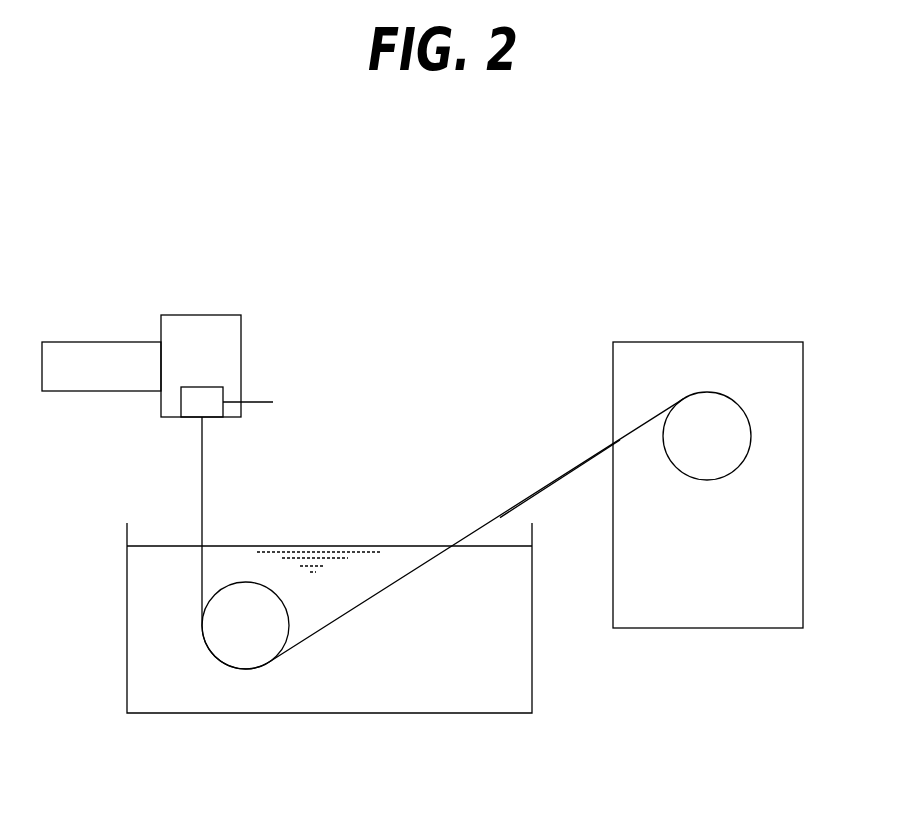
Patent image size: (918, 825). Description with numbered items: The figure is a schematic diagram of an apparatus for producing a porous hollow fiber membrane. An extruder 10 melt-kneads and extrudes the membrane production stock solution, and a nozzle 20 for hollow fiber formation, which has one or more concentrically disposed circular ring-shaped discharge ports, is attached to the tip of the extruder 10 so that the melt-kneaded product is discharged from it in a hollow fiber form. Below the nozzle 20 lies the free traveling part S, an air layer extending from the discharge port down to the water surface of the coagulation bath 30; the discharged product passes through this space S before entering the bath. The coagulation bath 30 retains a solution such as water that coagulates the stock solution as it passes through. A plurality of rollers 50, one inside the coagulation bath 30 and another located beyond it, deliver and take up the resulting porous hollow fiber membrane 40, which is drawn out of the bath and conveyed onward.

The extruder 10 is at (80, 347).
The nozzle for hollow fiber formation 20 is at (206, 388).
The free traveling part S is at (180, 417).
The coagulation bath 30 is at (532, 654).
The porous hollow fiber membrane 40 is at (557, 473).
The rollers 50 is at (225, 652).